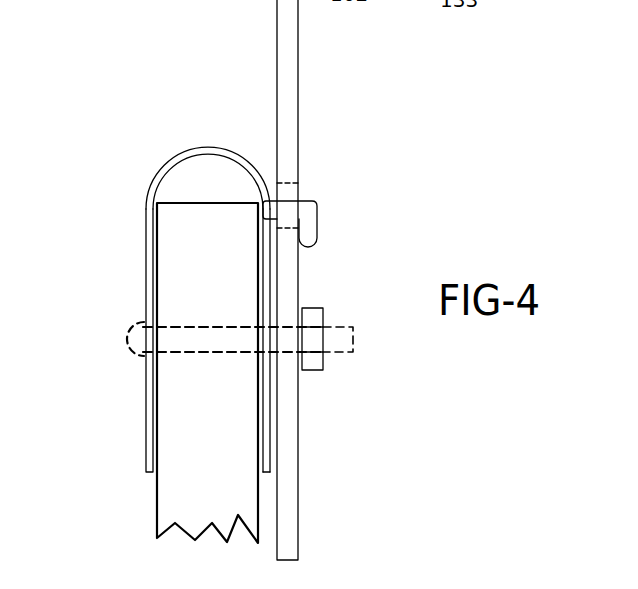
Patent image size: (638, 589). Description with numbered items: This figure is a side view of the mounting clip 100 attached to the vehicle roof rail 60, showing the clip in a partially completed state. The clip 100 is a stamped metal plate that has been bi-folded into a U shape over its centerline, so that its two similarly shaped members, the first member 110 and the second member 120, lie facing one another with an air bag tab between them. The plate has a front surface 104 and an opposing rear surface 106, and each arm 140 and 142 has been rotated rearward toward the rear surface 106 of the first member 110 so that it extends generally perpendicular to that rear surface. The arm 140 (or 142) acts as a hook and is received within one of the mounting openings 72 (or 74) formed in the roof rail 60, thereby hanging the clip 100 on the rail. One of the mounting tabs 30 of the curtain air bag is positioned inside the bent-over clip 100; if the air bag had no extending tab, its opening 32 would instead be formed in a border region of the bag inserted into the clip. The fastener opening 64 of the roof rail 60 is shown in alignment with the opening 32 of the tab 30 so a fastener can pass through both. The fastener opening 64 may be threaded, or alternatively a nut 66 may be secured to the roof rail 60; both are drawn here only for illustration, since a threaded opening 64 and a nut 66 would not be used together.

The mounting tab 30 is at (182, 282).
The opening 32 is at (192, 357).
The roof rail 60 is at (283, 76).
The fastener opening 64 is at (287, 325).
The nut 66 is at (323, 365).
The mounting opening 72 is at (356, 147).
The mounting opening 74 is at (277, 183).
The mounting clip 100 is at (173, 120).
The front surface 104 is at (340, 340).
The rear surface 106 is at (267, 383).
The first member 110 is at (267, 403).
The second member 120 is at (137, 448).
The arm 140 is at (382, 202).
The arm 142 is at (306, 228).